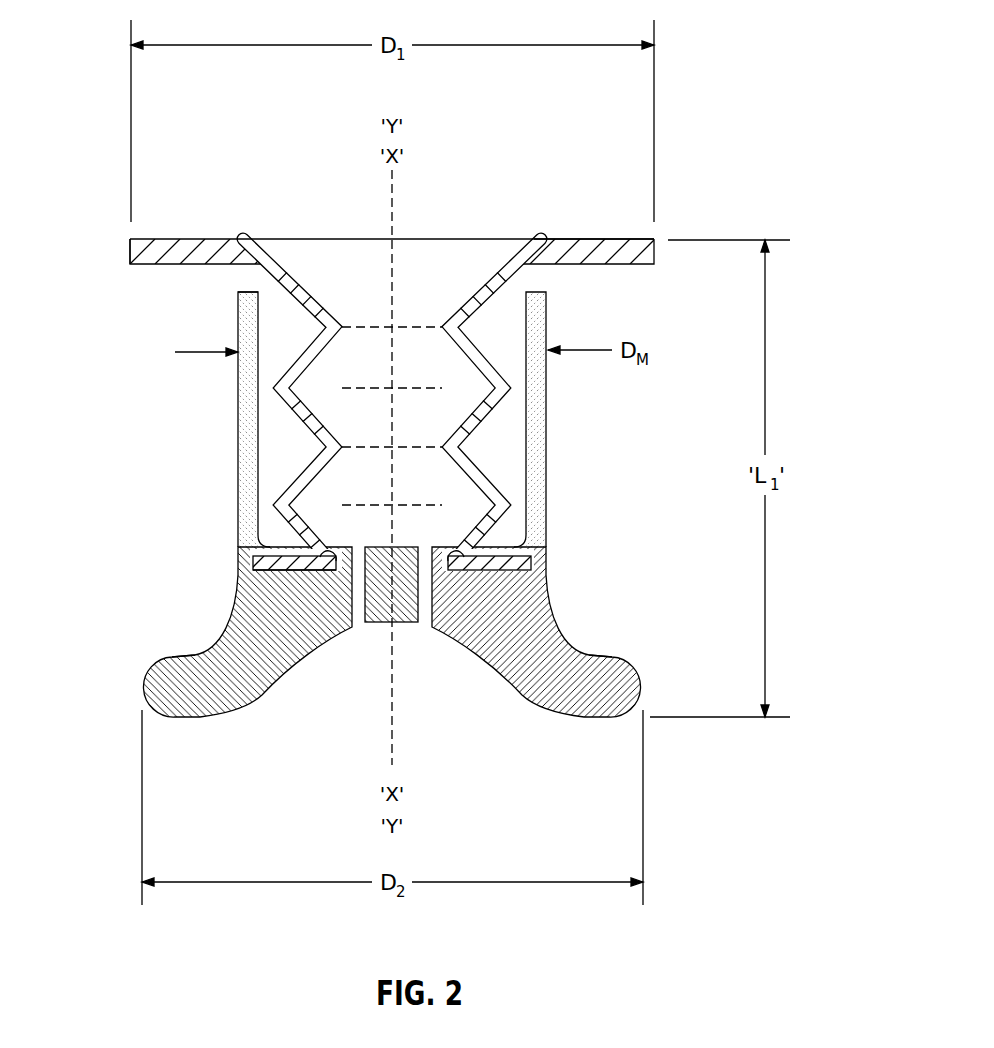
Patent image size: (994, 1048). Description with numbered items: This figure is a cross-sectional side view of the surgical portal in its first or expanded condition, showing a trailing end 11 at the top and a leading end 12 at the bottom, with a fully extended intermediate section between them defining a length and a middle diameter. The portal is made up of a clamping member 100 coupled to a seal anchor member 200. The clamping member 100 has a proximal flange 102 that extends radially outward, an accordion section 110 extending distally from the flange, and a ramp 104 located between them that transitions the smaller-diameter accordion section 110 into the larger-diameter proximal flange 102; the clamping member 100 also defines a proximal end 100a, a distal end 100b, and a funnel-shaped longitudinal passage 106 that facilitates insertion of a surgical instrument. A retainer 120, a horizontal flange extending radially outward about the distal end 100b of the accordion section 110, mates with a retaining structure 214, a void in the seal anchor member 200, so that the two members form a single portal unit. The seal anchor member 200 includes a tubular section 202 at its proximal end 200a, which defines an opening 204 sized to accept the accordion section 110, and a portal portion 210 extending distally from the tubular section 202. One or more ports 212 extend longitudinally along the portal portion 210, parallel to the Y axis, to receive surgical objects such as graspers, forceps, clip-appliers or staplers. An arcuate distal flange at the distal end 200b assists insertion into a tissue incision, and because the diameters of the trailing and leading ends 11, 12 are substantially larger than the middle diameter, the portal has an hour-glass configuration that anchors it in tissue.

The trailing end 11 is at (130, 240).
The leading end 12 is at (645, 695).
The clamping member 100 is at (406, 388).
The proximal end 100a is at (657, 255).
The distal end 100b is at (262, 562).
The proximal flange 102 is at (563, 239).
The ramp 104 is at (530, 268).
The longitudinal passage 106 is at (417, 252).
The accordion section 110 is at (438, 446).
The retainer 120 is at (250, 546).
The seal anchor member 200 is at (570, 628).
The proximal end 200a is at (238, 294).
The distal end 200b is at (142, 700).
The tubular section 202 is at (548, 403).
The opening 204 is at (284, 307).
The portal portion 210 is at (556, 569).
The port 212 is at (424, 630).
The retaining structure 214 is at (526, 553).